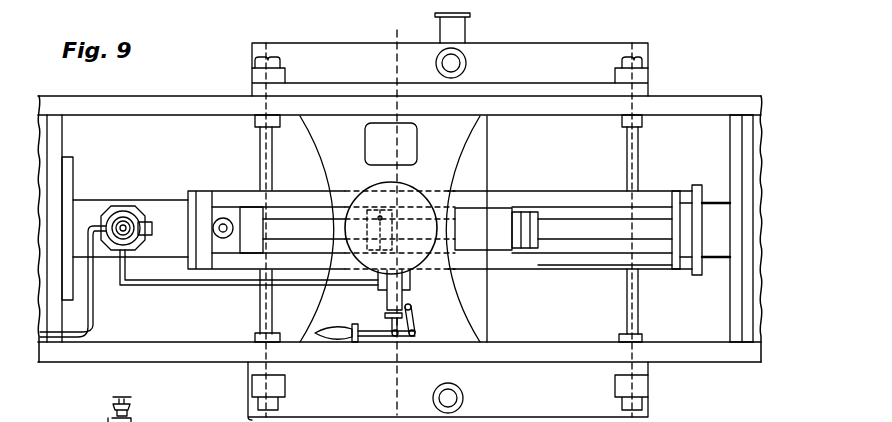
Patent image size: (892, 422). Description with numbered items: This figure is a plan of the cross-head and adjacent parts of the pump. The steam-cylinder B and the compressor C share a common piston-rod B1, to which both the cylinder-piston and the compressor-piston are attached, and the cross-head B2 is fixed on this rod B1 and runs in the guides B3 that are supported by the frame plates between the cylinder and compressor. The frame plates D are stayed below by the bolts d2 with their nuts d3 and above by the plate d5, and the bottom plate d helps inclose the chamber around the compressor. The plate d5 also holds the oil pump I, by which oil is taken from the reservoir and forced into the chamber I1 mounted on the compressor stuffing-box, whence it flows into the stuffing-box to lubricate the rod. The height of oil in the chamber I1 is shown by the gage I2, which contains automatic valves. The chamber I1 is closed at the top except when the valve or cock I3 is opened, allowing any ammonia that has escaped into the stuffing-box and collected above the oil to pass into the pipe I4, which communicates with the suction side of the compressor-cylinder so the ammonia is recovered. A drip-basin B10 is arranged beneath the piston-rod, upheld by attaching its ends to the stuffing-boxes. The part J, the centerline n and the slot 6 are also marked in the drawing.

The plate D is at (191, 111).
The compressor C is at (51, 167).
The plate J is at (73, 170).
The chamber I1 is at (128, 220).
The gage I2 is at (130, 228).
The pipe I4 is at (83, 281).
The valve or cock I3 is at (132, 407).
The pump I is at (375, 305).
The rod B1 is at (590, 196).
The cross-head B2 is at (496, 229).
The guide B3 is at (448, 216).
The drip-basin B10 is at (588, 268).
The steam-cylinder B is at (757, 213).
The bottom plate d is at (391, 228).
The bolt d2 is at (439, 230).
The nut d3 is at (430, 253).
The plate d5 is at (466, 126).
The center line n is at (394, 221).
The slot 6 is at (395, 230).